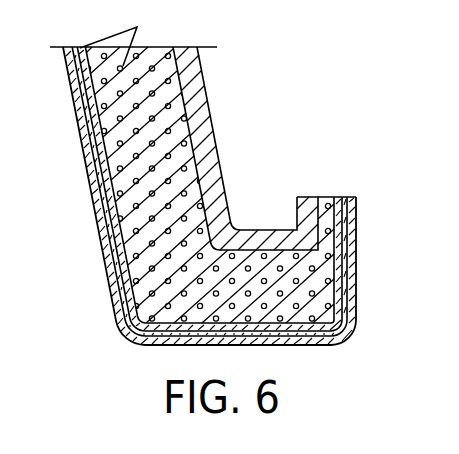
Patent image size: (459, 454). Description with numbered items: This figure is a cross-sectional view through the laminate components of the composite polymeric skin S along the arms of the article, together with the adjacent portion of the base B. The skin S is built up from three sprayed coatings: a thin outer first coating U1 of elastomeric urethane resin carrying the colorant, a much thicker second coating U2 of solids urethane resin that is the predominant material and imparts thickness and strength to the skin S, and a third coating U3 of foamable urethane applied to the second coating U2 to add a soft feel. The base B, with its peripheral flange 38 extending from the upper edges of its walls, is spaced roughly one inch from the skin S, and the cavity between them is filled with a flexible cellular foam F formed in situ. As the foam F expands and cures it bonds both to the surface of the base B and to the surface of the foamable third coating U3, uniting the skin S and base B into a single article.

The flexible cellular foam F is at (120, 112).
The base B is at (206, 92).
The peripheral flange 38 is at (252, 229).
The first coating U1 is at (358, 252).
The second coating U2 is at (340, 198).
The third coating U3 is at (335, 197).
The composite polymeric skin S is at (341, 354).